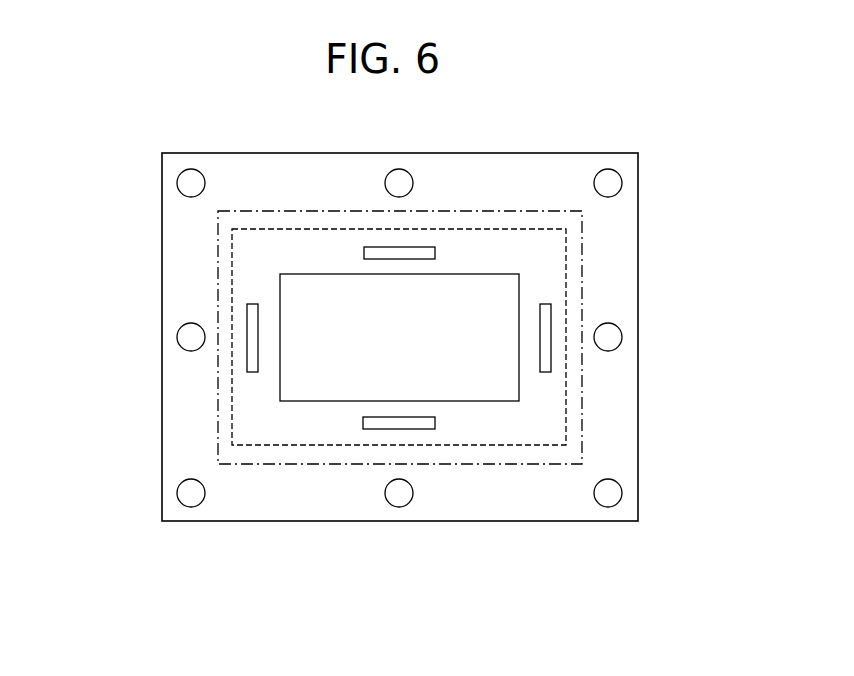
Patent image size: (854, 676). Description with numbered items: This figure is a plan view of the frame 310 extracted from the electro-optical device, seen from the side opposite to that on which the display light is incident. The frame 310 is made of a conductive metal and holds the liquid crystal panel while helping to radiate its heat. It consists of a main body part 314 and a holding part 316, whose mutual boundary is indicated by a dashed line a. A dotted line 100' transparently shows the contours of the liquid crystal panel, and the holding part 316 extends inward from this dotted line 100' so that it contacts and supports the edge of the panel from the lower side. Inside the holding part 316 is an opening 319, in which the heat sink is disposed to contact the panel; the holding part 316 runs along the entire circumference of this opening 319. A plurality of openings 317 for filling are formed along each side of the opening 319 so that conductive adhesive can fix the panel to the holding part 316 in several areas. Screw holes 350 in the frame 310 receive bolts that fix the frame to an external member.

The dashed line a is at (423, 212).
The dotted line 100' is at (399, 274).
The frame 310 is at (303, 590).
The main body part 314 is at (230, 488).
The holding part 316 is at (290, 430).
The opening for filling 317 is at (393, 418).
The opening 319 is at (481, 383).
The screw hole 350 is at (612, 340).